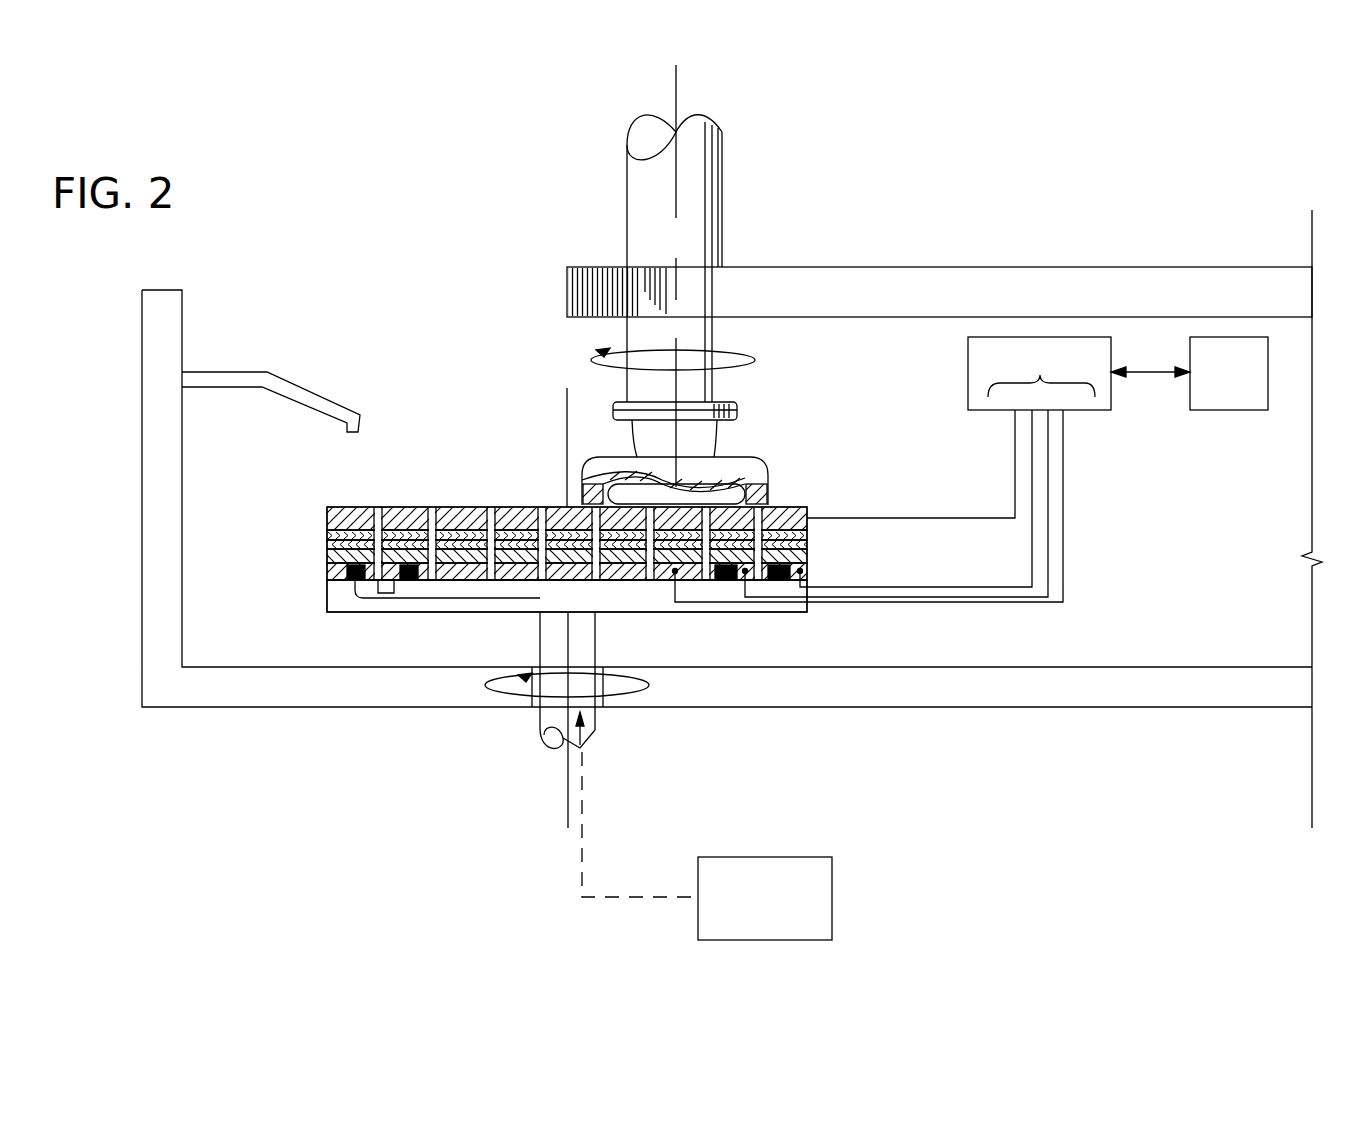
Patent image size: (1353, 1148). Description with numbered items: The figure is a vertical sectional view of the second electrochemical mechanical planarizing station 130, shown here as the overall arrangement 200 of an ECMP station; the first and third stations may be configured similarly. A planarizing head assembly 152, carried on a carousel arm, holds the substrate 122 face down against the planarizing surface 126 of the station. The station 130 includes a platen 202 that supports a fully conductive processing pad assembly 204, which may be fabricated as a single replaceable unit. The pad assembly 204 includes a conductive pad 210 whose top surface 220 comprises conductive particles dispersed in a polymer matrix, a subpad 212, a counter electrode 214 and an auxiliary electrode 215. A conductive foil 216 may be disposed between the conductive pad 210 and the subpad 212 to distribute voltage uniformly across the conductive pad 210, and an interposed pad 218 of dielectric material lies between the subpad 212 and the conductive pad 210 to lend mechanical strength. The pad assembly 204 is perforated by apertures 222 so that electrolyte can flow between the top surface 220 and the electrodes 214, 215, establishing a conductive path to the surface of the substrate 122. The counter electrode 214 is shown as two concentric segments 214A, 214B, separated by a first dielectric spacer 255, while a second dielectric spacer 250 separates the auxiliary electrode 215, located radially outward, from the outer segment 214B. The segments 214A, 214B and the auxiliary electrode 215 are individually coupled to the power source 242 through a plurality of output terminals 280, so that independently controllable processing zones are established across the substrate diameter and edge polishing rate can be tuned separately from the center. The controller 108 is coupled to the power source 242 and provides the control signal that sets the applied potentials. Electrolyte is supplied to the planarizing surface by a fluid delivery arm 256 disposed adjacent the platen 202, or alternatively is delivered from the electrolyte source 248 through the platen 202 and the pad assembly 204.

The polishing apparatus 200 is at (804, 210).
The second ECMP station 130 is at (793, 404).
The substrate 122 is at (723, 488).
The planarizing head assembly 152 is at (760, 452).
The planarizing surface 126 is at (770, 487).
The conductive pad 210 is at (795, 507).
The top surface 220 is at (455, 507).
The apertures 222 is at (382, 520).
The conductive foil 216 is at (807, 535).
The interposed pad 218 is at (327, 545).
The subpad 212 is at (807, 555).
The auxiliary electrode 215 is at (327, 578).
The processing pad assembly 204 is at (317, 580).
The platen 202 is at (327, 600).
The second dielectric spacer 250 is at (358, 583).
The first dielectric spacer 255 is at (410, 583).
The counter electrode segment 214A is at (455, 572).
The counter electrode segment 214B is at (393, 597).
The counter electrode 214 is at (598, 612).
The power source 242 is at (1039, 373).
The controller 108 is at (1189, 373).
The output terminals 280 is at (1075, 385).
The electrolyte source 248 is at (832, 883).
The fluid delivery arm 256 is at (246, 372).